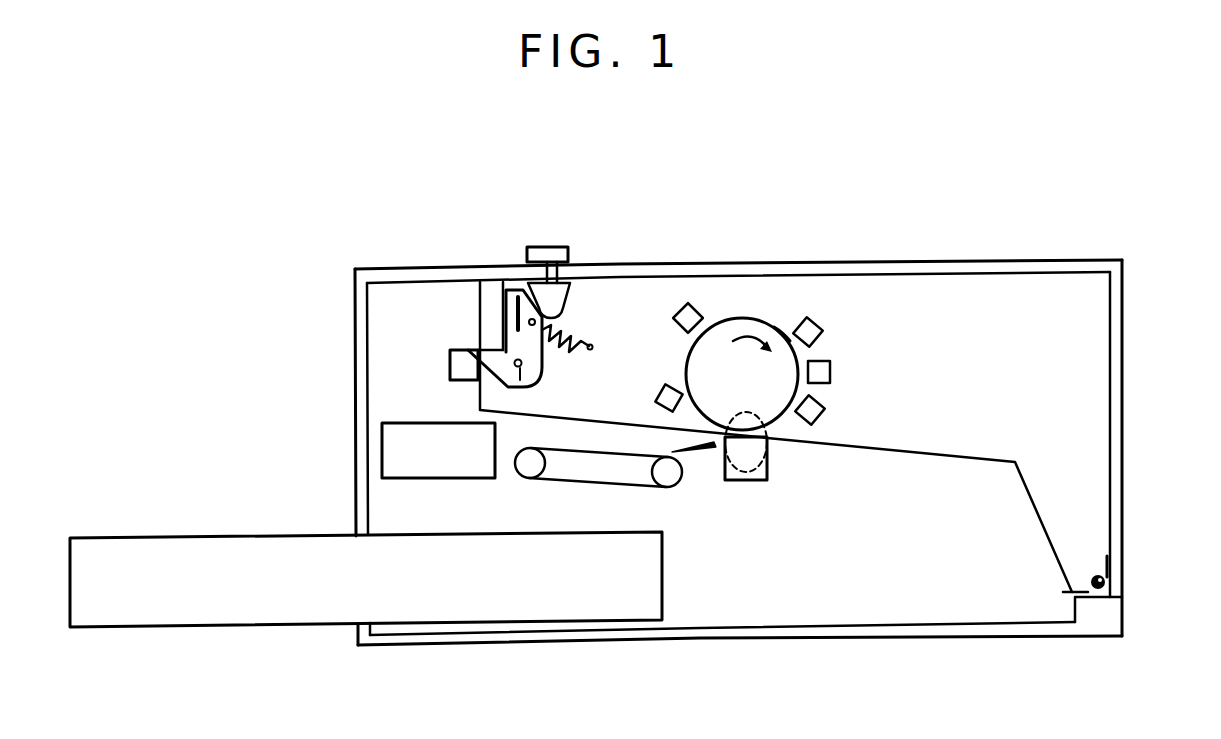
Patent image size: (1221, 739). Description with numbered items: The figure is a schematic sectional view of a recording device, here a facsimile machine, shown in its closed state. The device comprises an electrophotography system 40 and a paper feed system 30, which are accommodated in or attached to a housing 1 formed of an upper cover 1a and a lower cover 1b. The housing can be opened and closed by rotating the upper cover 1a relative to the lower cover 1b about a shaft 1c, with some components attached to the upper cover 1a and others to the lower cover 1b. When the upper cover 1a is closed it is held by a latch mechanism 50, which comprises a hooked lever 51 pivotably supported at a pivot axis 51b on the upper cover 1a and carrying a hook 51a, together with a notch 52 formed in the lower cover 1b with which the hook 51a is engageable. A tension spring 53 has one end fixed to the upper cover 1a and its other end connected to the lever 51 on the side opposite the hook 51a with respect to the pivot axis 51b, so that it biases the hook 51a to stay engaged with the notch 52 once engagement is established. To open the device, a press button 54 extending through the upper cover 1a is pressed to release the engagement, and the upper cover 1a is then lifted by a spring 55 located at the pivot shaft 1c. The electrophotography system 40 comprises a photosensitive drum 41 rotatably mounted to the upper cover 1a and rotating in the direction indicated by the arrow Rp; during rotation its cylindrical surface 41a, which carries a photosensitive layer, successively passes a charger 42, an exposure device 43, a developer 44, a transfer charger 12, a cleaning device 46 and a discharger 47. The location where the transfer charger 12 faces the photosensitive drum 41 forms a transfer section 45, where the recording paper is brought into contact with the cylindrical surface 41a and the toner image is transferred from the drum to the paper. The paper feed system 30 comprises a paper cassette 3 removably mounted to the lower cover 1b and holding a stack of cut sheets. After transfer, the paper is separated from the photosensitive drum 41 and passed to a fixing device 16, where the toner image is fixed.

The housing 1 is at (1138, 335).
The upper cover 1a is at (1127, 498).
The lower cover 1b is at (982, 633).
The shaft 1c is at (1108, 579).
The paper cassette 3 is at (663, 597).
The transfer charger 12 is at (768, 468).
The fixing device 16 is at (400, 480).
The paper feed system 30 is at (690, 562).
The electrophotography system 40 is at (718, 316).
The photosensitive drum 41 is at (751, 308).
The cylindrical surface 41a is at (786, 312).
The charger 42 is at (822, 330).
The exposure device 43 is at (831, 372).
The developer 44 is at (824, 420).
The transfer section 45 is at (746, 481).
The cleaning device 46 is at (665, 386).
The discharger 47 is at (688, 303).
The latch mechanism 50 is at (472, 334).
The hooked lever 51 is at (508, 387).
The hook 51a is at (490, 350).
The pivot axis 51b is at (522, 366).
The notch 52 is at (455, 348).
The tension spring 53 is at (576, 334).
The press button 54 is at (555, 247).
The spring 55 is at (1105, 557).